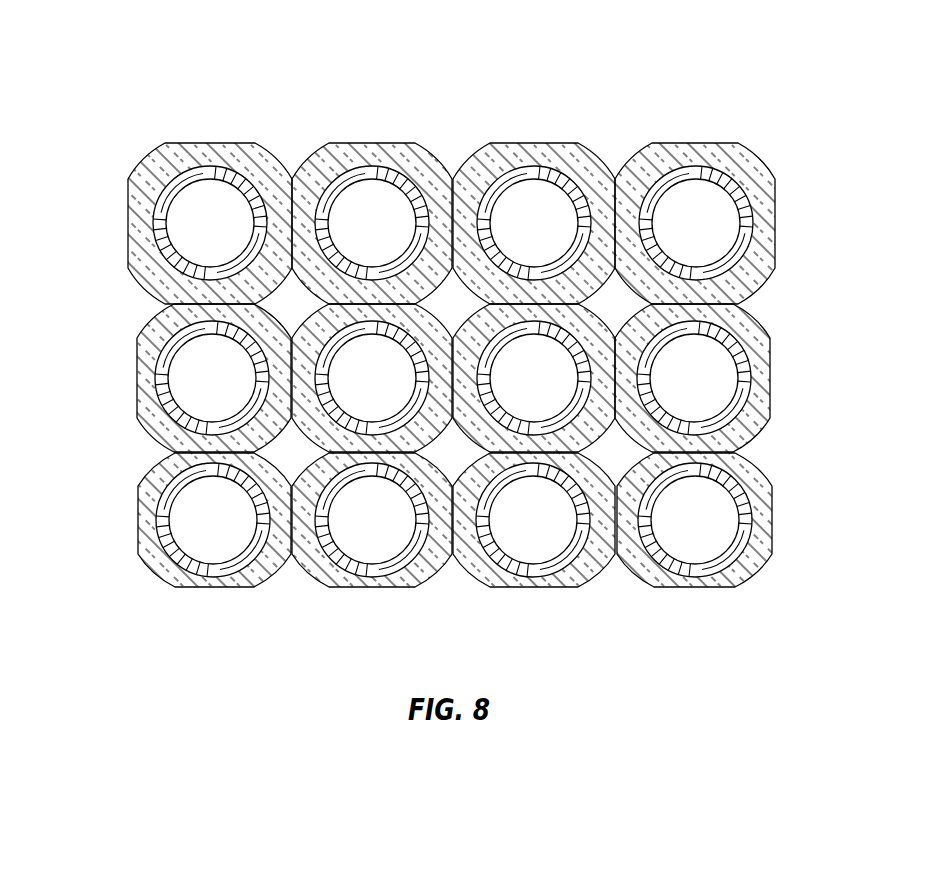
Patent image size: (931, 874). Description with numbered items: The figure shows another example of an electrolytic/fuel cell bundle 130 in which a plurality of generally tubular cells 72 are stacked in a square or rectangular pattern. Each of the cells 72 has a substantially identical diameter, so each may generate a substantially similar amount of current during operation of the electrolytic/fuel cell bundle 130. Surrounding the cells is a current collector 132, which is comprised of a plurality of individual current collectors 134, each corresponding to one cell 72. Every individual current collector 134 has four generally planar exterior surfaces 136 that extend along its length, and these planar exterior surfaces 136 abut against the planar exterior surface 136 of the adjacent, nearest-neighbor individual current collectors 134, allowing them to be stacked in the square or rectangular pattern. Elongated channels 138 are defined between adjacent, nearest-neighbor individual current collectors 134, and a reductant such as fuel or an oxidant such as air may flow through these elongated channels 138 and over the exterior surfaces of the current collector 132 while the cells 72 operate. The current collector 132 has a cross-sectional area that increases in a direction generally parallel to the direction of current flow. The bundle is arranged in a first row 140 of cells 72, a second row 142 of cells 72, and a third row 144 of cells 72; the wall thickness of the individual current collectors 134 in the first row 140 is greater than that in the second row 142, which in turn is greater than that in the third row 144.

The electrolytic/fuel cell bundle 130 is at (333, 80).
The current collector 132 is at (759, 150).
The individual current collector 134 is at (180, 165).
The generally planar exterior surface 136 is at (218, 172).
The elongated channel 138 is at (615, 302).
The first row 140 is at (120, 241).
The second row 142 is at (120, 387).
The third row 144 is at (122, 516).
The generally tubular cell 72 is at (234, 180).